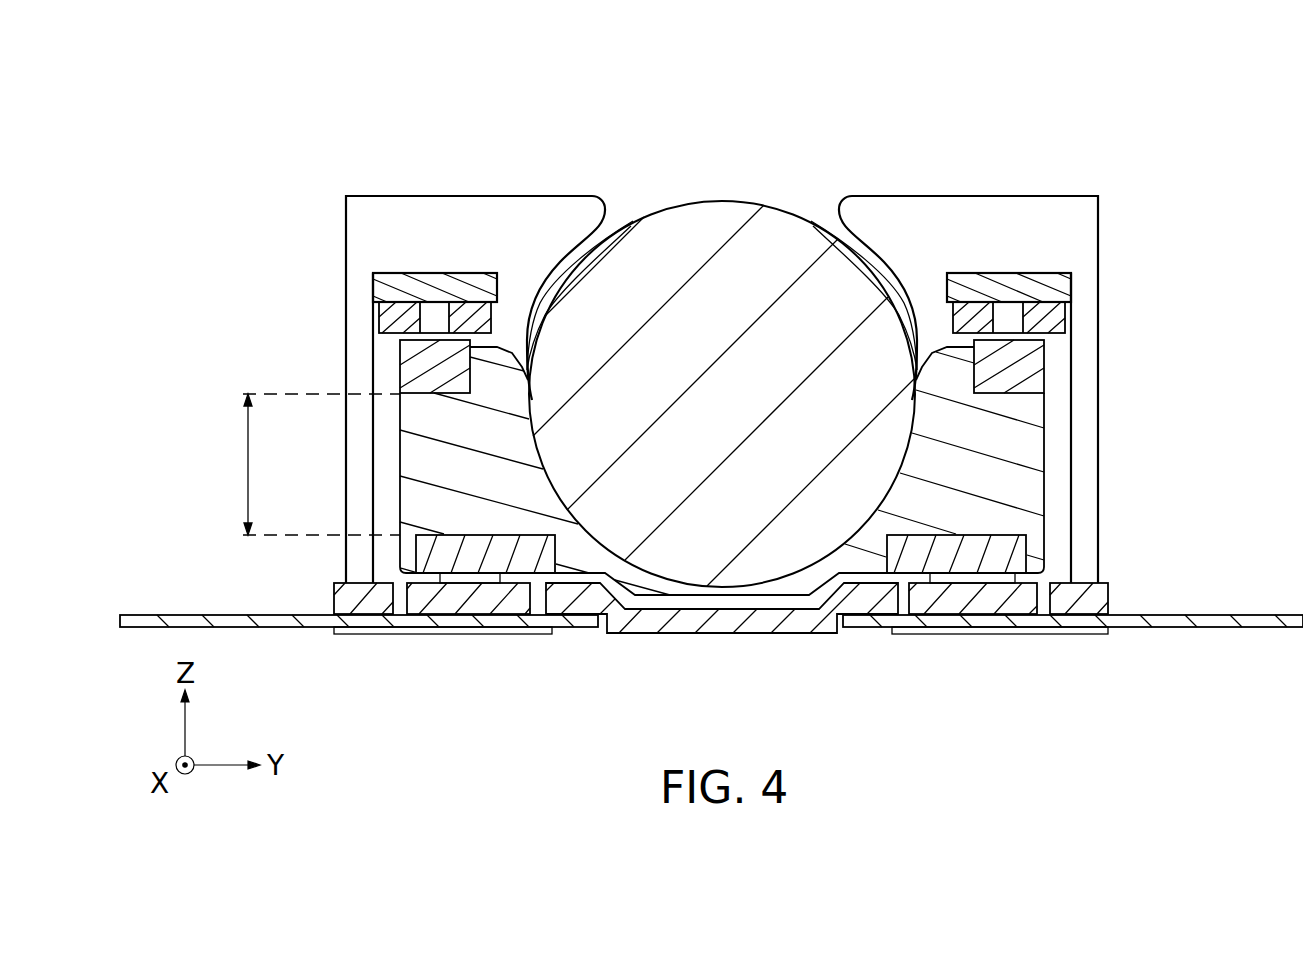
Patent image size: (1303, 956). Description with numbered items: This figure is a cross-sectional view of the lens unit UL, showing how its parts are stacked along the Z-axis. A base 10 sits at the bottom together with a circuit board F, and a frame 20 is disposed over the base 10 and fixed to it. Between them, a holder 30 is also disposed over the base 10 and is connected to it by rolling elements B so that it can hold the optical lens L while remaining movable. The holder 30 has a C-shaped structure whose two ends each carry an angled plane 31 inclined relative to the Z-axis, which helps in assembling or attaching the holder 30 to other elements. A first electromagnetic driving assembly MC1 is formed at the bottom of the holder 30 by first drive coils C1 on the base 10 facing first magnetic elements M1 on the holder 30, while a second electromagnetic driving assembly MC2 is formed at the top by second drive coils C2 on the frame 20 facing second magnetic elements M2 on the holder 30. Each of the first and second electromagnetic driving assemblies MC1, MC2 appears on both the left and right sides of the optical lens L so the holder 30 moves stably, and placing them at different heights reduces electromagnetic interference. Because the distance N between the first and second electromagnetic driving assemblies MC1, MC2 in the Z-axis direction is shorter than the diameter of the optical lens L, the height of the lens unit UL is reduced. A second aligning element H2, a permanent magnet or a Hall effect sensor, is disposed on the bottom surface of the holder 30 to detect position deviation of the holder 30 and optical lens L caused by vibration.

The base 10 is at (722, 620).
The frame 20 is at (432, 285).
The holder 30 is at (1005, 480).
The angled plane 31 is at (526, 352).
The optical lens L is at (720, 265).
The first drive coil C1 is at (428, 598).
The first magnetic element M1 is at (543, 550).
The first electromagnetic driving assembly MC1 is at (837, 387).
The second drive coil C2 is at (397, 318).
The second magnetic element M2 is at (423, 367).
The second electromagnetic driving assembly MC2 is at (722, 347).
The distance N is at (309, 464).
The circuit board F is at (183, 620).
The rolling element B is at (482, 582).
The second aligning element H2 is at (1000, 582).
The lens unit UL is at (233, 103).